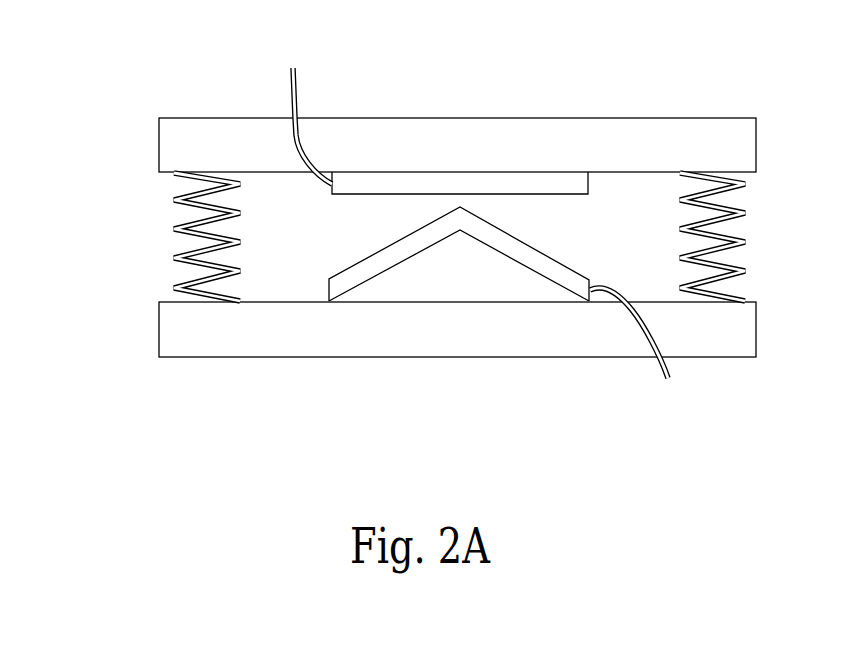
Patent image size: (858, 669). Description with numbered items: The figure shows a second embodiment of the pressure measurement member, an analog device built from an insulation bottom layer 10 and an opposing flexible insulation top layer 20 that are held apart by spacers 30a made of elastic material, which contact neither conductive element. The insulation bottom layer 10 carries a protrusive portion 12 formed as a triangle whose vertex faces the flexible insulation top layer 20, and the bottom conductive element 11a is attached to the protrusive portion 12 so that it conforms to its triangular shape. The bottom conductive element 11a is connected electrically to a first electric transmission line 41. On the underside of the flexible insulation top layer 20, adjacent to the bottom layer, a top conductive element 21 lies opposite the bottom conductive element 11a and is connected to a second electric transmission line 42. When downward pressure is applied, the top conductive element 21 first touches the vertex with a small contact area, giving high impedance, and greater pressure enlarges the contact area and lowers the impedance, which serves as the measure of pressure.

The insulation bottom layer 10 is at (270, 332).
The bottom conductive element 11a is at (515, 253).
The protrusive portion 12 is at (440, 247).
The flexible insulation top layer 20 is at (438, 142).
The top conductive element 21 is at (542, 182).
The spacer 30a is at (175, 235).
The first electric transmission line 41 is at (656, 368).
The second electric transmission line 42 is at (302, 95).